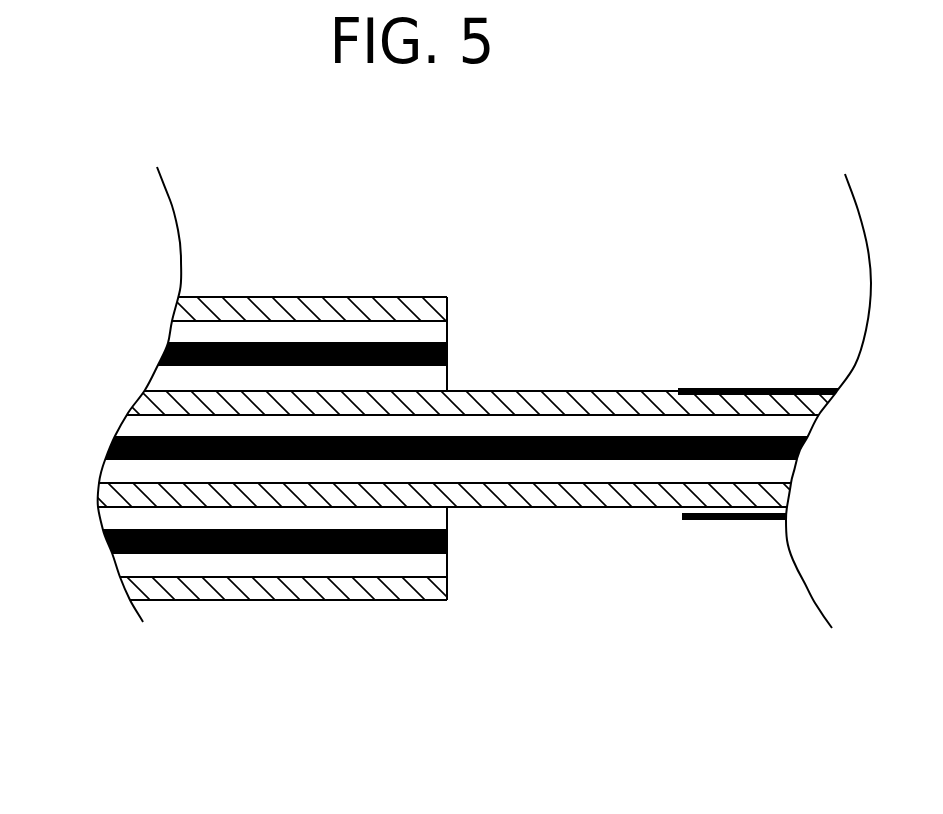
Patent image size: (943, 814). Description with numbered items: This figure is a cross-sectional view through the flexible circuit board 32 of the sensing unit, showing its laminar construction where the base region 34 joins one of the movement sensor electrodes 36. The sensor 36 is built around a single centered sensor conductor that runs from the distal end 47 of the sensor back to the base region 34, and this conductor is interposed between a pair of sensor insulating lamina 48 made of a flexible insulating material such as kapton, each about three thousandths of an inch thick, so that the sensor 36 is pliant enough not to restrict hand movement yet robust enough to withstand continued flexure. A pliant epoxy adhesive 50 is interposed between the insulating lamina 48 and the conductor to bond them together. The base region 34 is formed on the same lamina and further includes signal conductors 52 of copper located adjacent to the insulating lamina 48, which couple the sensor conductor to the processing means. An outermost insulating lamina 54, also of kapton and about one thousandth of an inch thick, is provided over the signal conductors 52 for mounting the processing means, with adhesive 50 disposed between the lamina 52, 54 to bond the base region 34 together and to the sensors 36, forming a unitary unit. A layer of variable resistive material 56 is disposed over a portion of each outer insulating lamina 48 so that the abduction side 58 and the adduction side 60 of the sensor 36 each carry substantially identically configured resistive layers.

The flexible circuit board 32 is at (582, 135).
The base region 34 is at (280, 648).
The movement sensor electrodes 36 is at (647, 572).
The distal end 47 is at (593, 462).
The sensor insulating lamina 48 is at (632, 402).
The adhesive 50 is at (422, 377).
The signal conductors 52 is at (180, 343).
The outermost insulating lamina 54 is at (266, 297).
The variable resistive material 56 is at (774, 386).
The abduction side 58 is at (490, 519).
The adduction side 60 is at (502, 375).